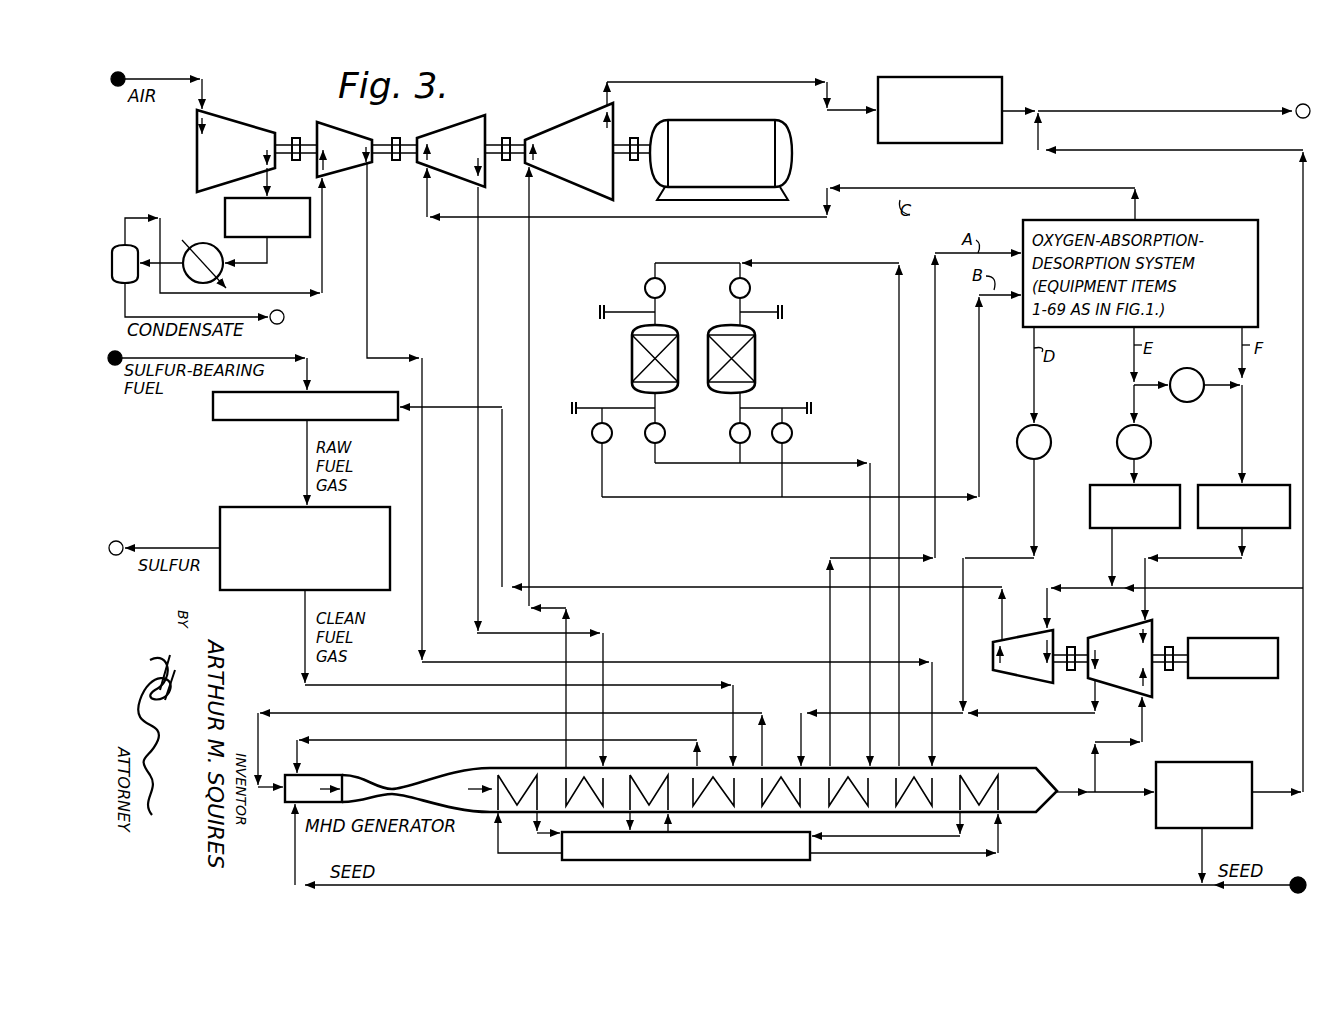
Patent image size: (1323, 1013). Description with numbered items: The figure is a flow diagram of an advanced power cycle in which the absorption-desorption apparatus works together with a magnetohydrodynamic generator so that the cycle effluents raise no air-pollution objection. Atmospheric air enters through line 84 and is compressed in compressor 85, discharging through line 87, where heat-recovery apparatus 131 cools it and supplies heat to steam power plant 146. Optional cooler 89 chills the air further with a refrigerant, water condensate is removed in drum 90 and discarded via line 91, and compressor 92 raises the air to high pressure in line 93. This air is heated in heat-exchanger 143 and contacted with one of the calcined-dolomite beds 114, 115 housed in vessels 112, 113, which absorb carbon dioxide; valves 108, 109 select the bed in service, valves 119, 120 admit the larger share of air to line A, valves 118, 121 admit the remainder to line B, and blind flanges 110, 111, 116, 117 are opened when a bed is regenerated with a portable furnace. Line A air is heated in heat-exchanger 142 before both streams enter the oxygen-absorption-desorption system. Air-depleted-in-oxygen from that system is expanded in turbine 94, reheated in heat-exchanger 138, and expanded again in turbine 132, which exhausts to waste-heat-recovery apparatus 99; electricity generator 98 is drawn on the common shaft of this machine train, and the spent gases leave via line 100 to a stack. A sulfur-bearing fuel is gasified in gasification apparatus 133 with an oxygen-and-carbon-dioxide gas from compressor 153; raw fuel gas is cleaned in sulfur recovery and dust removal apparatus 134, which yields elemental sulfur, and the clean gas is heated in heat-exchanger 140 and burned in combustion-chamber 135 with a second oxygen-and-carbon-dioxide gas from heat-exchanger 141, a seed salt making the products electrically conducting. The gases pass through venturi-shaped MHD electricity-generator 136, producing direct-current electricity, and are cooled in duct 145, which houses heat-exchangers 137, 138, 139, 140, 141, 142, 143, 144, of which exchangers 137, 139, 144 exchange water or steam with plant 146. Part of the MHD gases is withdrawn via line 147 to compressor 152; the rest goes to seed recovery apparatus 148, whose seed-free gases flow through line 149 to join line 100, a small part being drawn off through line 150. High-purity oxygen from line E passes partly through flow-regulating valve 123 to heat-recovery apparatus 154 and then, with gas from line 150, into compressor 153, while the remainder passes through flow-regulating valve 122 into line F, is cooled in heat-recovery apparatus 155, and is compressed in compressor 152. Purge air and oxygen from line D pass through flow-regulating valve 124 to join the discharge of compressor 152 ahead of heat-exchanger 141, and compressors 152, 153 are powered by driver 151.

The air supply line 84 is at (203, 80).
The compressor 85 is at (236, 151).
The compressed air line 87 is at (269, 180).
The cooler 89 is at (212, 243).
The drum 90 is at (217, 235).
The condensate line 91 is at (152, 310).
The compressor 92 is at (344, 149).
The compressed air line 93 is at (368, 248).
The turbine 94 is at (510, 440).
The electricity generator 98 is at (727, 121).
The waste-heat-recovery apparatus 99 is at (878, 131).
The stack line 100 is at (1110, 116).
The valve 108 is at (648, 280).
The valve 109 is at (751, 288).
The blind flange 110 is at (610, 311).
The blind flange 111 is at (782, 311).
The vessel 112 is at (632, 365).
The vessel 113 is at (755, 364).
The solid-particulate bed 114 is at (650, 344).
The solid-particulate bed 115 is at (733, 343).
The blind flange 116 is at (598, 407).
The blind flange 117 is at (795, 407).
The valve 118 is at (593, 438).
The valve 119 is at (671, 424).
The valve 120 is at (730, 437).
The valve 121 is at (793, 437).
The flow-regulating valve 122 is at (1196, 400).
The flow-regulating valve 123 is at (1151, 449).
The flow-regulating valve 124 is at (1050, 450).
The heat-recovery apparatus 131 is at (288, 238).
The turbine 132 is at (569, 425).
The gasification apparatus 133 is at (227, 420).
The sulfur recovery and dust removal apparatus 134 is at (262, 507).
The combustion-chamber 135 is at (322, 775).
The MHD electricity-generator 136 is at (401, 786).
The heat-exchanger 137 is at (530, 814).
The heat-exchanger 138 is at (584, 791).
The heat-exchanger 139 is at (649, 803).
The heat-exchanger 140 is at (713, 791).
The heat-exchanger 141 is at (781, 791).
The heat-exchanger 142 is at (848, 791).
The heat-exchanger 143 is at (914, 791).
The heat-exchanger 144 is at (904, 814).
The duct 145 is at (986, 768).
The steam power plant 146 is at (801, 861).
The MHD gas withdrawal line 147 is at (1146, 722).
The seed recovery apparatus 148 is at (1229, 762).
The seed-free gas line 149 is at (1302, 728).
The recycle gas line 150 is at (1240, 588).
The driver 151 is at (1228, 638).
The compressor 152 is at (1120, 665).
The compressor 153 is at (1023, 635).
The heat-recovery apparatus 154 is at (1090, 500).
The heat-recovery apparatus 155 is at (1274, 485).